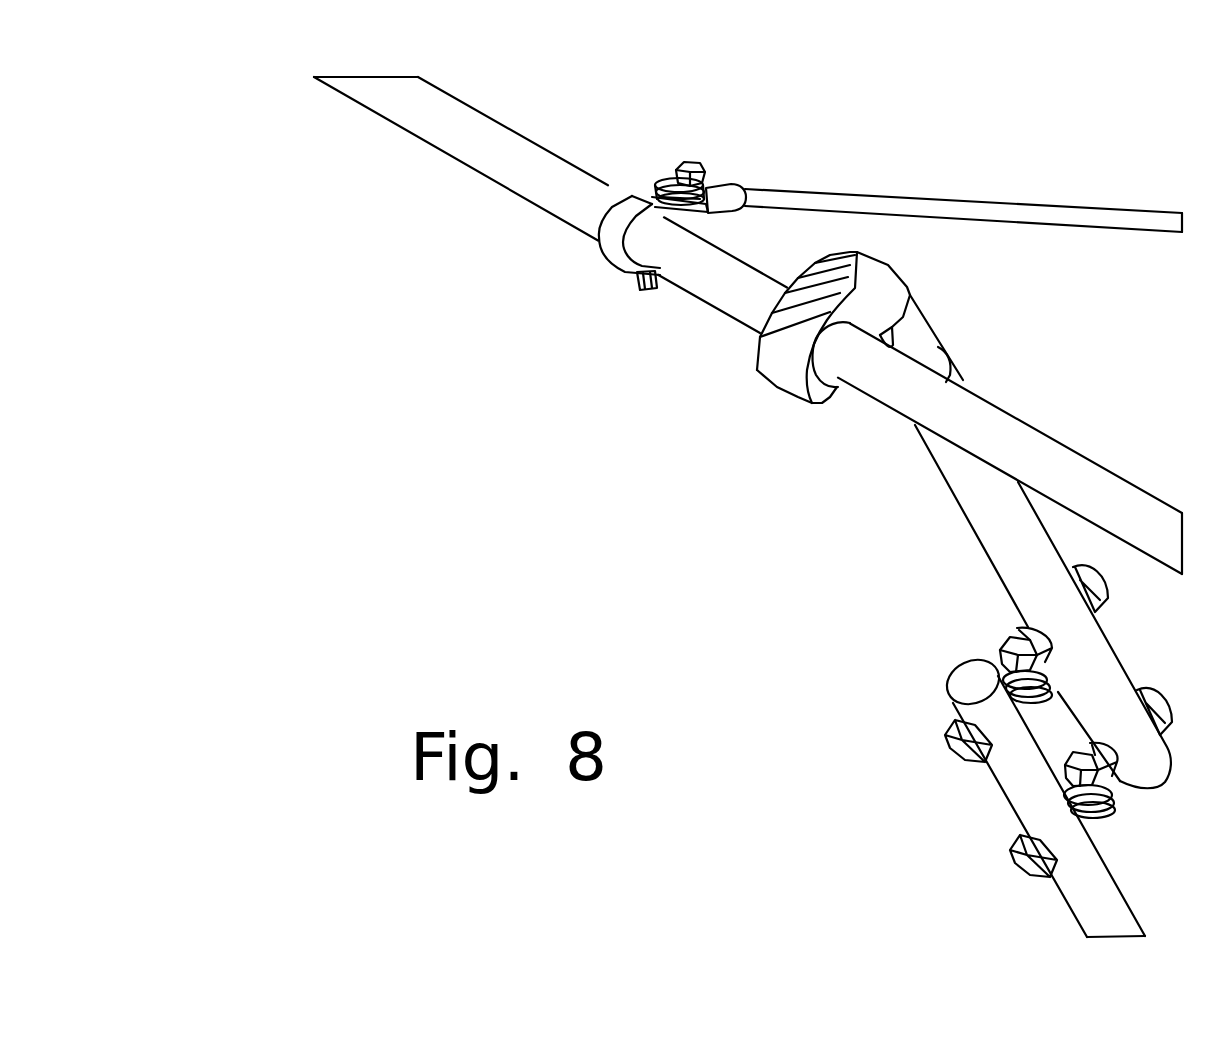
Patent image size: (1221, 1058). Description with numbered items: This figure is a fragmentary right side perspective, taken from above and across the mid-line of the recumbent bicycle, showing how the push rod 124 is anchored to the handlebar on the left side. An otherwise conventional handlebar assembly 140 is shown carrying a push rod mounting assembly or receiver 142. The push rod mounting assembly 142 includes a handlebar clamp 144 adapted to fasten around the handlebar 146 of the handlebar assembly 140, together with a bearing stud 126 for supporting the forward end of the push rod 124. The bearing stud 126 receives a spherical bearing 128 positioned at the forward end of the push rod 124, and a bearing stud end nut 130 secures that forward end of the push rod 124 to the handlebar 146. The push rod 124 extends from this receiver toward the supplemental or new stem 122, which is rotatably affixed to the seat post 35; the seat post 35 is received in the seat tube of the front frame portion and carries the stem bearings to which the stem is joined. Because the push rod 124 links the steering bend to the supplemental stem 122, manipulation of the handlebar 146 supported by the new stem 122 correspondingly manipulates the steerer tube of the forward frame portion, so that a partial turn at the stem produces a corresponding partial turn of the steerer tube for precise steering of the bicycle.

The seat post 35 is at (1003, 782).
The supplemental stem 122 is at (913, 300).
The push rod 124 is at (951, 197).
The bearing stud 126 is at (702, 160).
The spherical bearing 128 is at (658, 172).
The bearing stud end nut 130 is at (655, 290).
The handlebar assembly 140 is at (430, 157).
The push rod mounting assembly 142 is at (593, 260).
The handlebar clamp 144 is at (618, 268).
The handlebar 146 is at (487, 177).